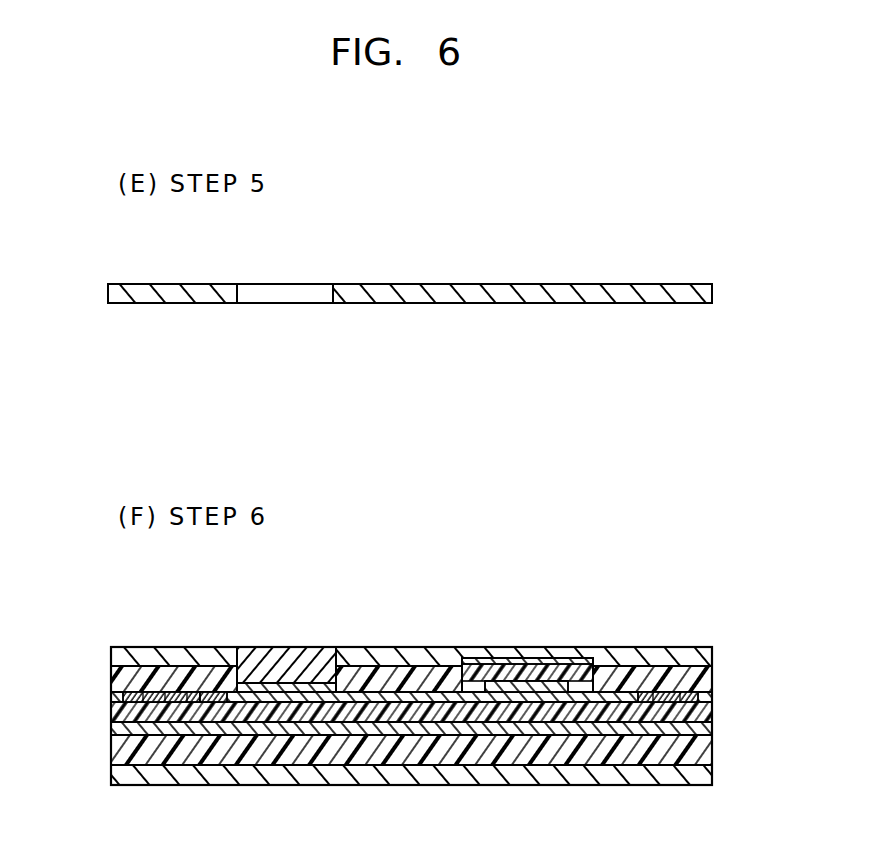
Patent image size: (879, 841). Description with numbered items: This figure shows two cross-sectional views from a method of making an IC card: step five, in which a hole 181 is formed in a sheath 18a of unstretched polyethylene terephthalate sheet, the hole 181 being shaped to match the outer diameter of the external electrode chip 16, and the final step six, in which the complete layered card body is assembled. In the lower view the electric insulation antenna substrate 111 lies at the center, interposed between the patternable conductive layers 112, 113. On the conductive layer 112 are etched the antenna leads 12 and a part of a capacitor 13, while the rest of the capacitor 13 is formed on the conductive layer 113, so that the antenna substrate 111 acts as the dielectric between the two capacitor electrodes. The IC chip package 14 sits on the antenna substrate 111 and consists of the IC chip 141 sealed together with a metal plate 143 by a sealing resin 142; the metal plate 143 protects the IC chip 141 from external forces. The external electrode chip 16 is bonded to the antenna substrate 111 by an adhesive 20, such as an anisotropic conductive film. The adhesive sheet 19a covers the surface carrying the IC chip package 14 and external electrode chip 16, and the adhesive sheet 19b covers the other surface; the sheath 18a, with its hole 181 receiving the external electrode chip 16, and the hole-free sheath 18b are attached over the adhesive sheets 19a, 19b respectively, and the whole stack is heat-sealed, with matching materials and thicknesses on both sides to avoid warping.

The antenna lead 12 is at (162, 690).
The capacitor 13 is at (215, 692).
The IC chip package 14 is at (517, 632).
The IC chip 141 is at (490, 660).
The sealing resin 142 is at (540, 670).
The metal plate 143 is at (565, 659).
The external electrode chip 16 is at (272, 670).
The adhesive 20 is at (313, 688).
The sheath 18a is at (565, 297).
The sheath 18b is at (705, 776).
The hole 181 is at (238, 286).
The adhesive sheet 19a is at (700, 678).
The adhesive sheet 19b is at (705, 750).
The antenna substrate 111 is at (111, 712).
The patternable conductive layer 112 is at (118, 697).
The patternable conductive layer 113 is at (111, 731).